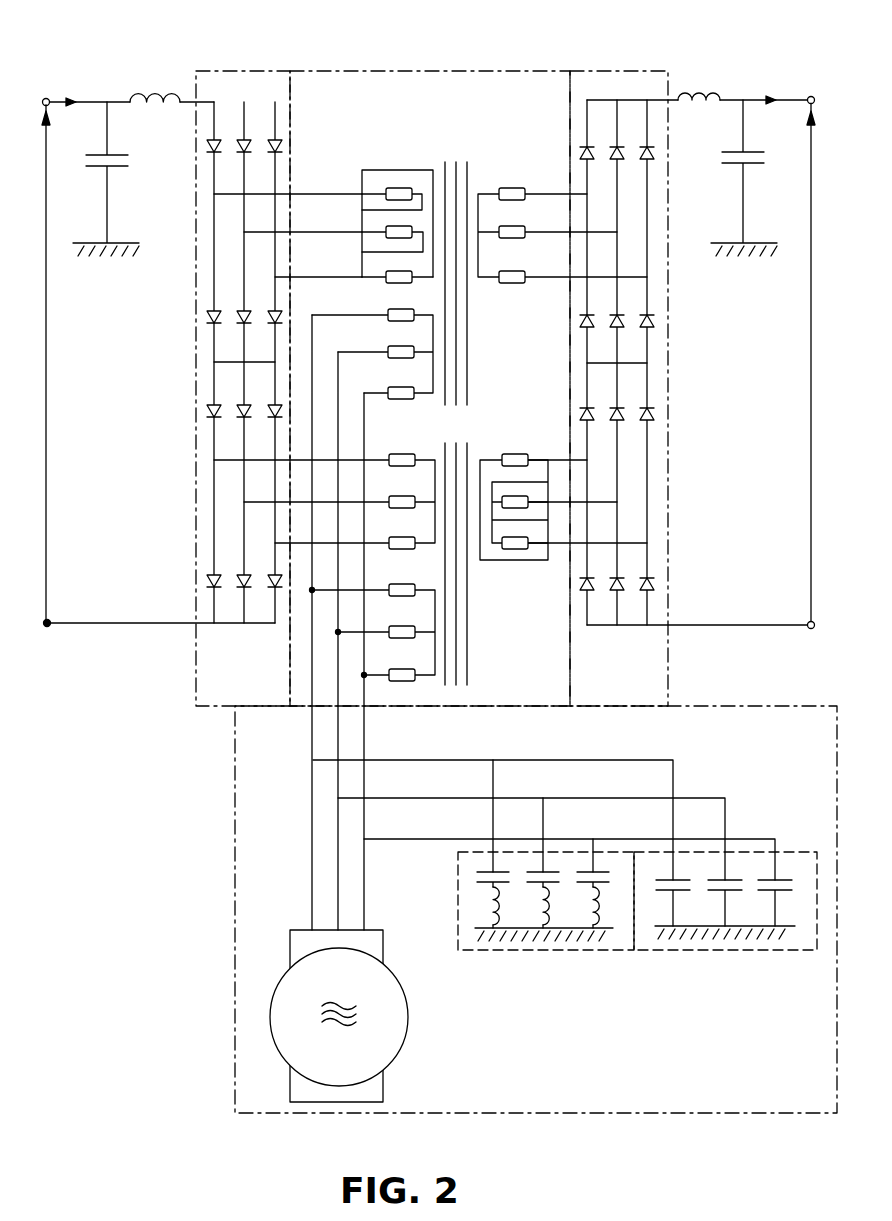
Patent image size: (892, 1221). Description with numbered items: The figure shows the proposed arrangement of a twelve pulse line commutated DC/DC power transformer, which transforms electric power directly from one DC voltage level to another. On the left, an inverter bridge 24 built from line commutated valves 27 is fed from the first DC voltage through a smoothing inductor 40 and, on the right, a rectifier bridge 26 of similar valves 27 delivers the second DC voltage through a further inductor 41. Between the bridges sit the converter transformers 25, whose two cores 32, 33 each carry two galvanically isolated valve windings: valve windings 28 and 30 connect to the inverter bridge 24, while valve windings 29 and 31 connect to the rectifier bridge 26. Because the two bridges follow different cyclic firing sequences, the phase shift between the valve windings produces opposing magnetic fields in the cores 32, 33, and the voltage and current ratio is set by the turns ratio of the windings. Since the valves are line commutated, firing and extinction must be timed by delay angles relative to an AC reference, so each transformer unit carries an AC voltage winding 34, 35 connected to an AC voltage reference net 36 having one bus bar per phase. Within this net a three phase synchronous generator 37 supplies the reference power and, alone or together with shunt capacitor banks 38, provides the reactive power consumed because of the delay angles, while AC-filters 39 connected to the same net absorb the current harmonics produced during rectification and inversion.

The inverter bridge 24 is at (218, 73).
The converter transformer 25 is at (400, 71).
The rectifier bridge 26 is at (591, 72).
The valves 27 is at (266, 143).
The valve winding 28 is at (386, 237).
The valve winding 29 is at (518, 224).
The valve winding 30 is at (402, 538).
The valve winding 31 is at (514, 538).
The transformer core 32 is at (470, 164).
The transformer core 33 is at (470, 438).
The AC voltage winding 34 is at (392, 311).
The AC voltage winding 35 is at (390, 574).
The AC voltage reference net 36 is at (718, 712).
The three phase synchronous generator 37 is at (288, 975).
The shunt capacitor banks 38 is at (806, 864).
The AC-filters 39 is at (450, 874).
The first smoothing inductor 40 is at (131, 98).
The second smoothing inductor 41 is at (713, 93).